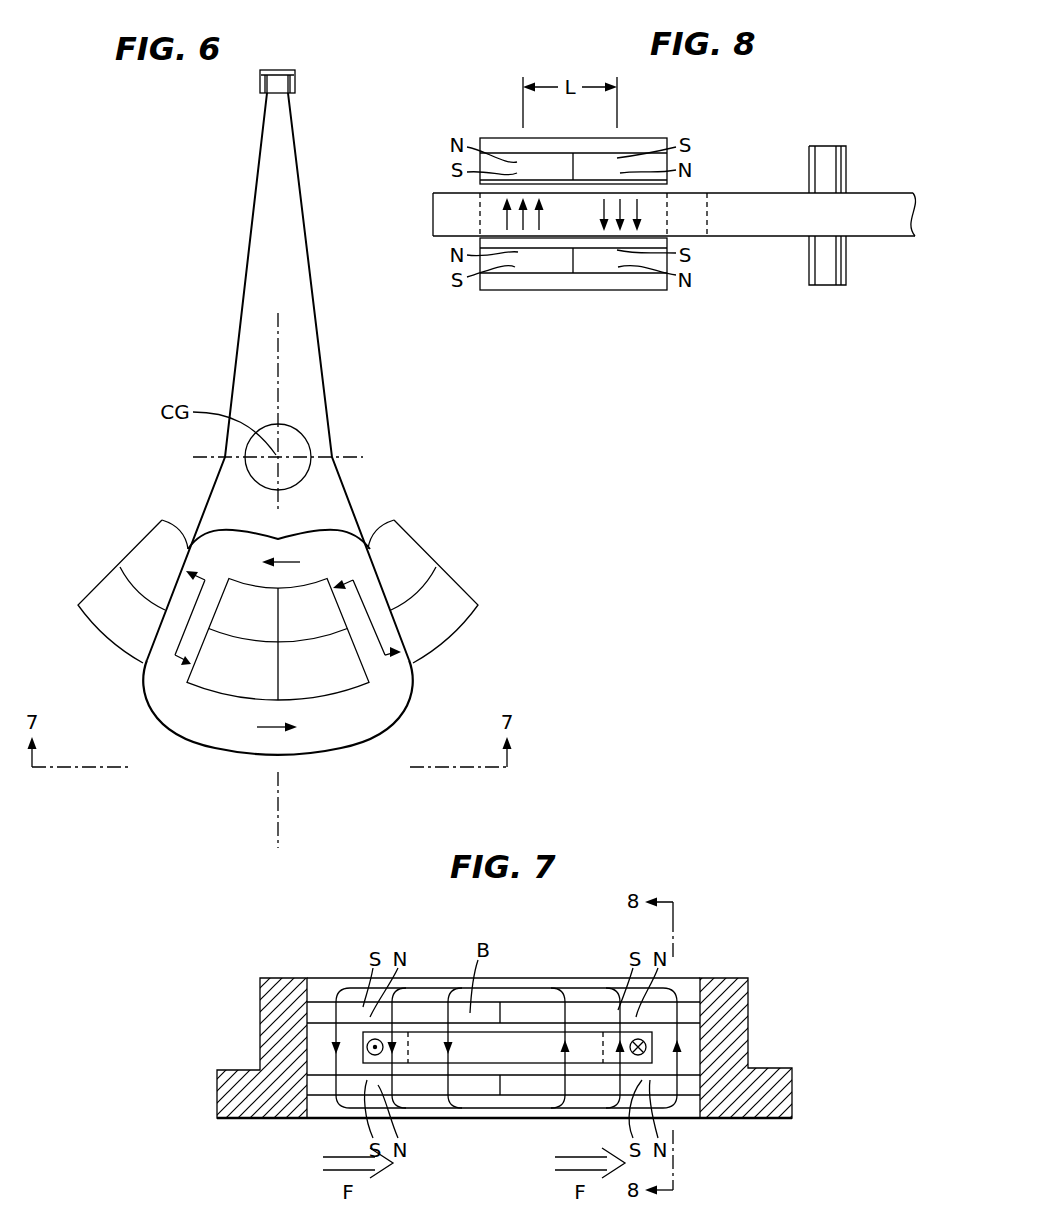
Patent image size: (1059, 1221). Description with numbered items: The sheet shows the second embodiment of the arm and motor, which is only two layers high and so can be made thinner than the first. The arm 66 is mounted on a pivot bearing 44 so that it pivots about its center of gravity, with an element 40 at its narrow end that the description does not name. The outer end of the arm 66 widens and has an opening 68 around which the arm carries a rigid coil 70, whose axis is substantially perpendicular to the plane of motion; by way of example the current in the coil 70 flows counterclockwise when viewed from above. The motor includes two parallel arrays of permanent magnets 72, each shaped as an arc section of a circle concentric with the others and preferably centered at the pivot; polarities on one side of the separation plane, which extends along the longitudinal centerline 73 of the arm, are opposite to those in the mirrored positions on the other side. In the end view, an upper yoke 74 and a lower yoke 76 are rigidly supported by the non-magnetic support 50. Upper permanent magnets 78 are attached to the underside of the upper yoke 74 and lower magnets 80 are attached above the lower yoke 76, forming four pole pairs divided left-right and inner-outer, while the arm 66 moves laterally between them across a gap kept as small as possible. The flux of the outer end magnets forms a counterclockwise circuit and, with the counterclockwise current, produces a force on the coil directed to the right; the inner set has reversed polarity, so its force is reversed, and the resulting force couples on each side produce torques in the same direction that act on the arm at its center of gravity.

In FIG. 6, the pivot clamp block 40 is at (268, 70).
In FIG. 6, the pivot bearing 44 is at (309, 442).
In FIG. 8, the pivot bearing 44 is at (822, 145).
In FIG. 7, the non-magnetic support 50 is at (239, 1068).
In FIG. 6, the arm 66 is at (236, 218).
In FIG. 7, the arm 66 is at (655, 1038).
In FIG. 8, the arm 66 is at (858, 184).
In FIG. 6, the opening 68 is at (192, 672).
In FIG. 6, the rigid coil 70 is at (404, 727).
In FIG. 8, the rigid coil 70 is at (443, 192).
In FIG. 6, the permanent magnets 72 is at (453, 581).
In FIG. 6, the longitudinal centerline 73 is at (281, 363).
In FIG. 7, the upper yoke 74 is at (315, 978).
In FIG. 8, the upper yoke 74 is at (557, 147).
In FIG. 7, the lower yoke 76 is at (320, 1108).
In FIG. 8, the lower yoke 76 is at (538, 292).
In FIG. 7, the upper permanent magnets 78 is at (322, 1010).
In FIG. 7, the lower magnets 80 is at (470, 1068).